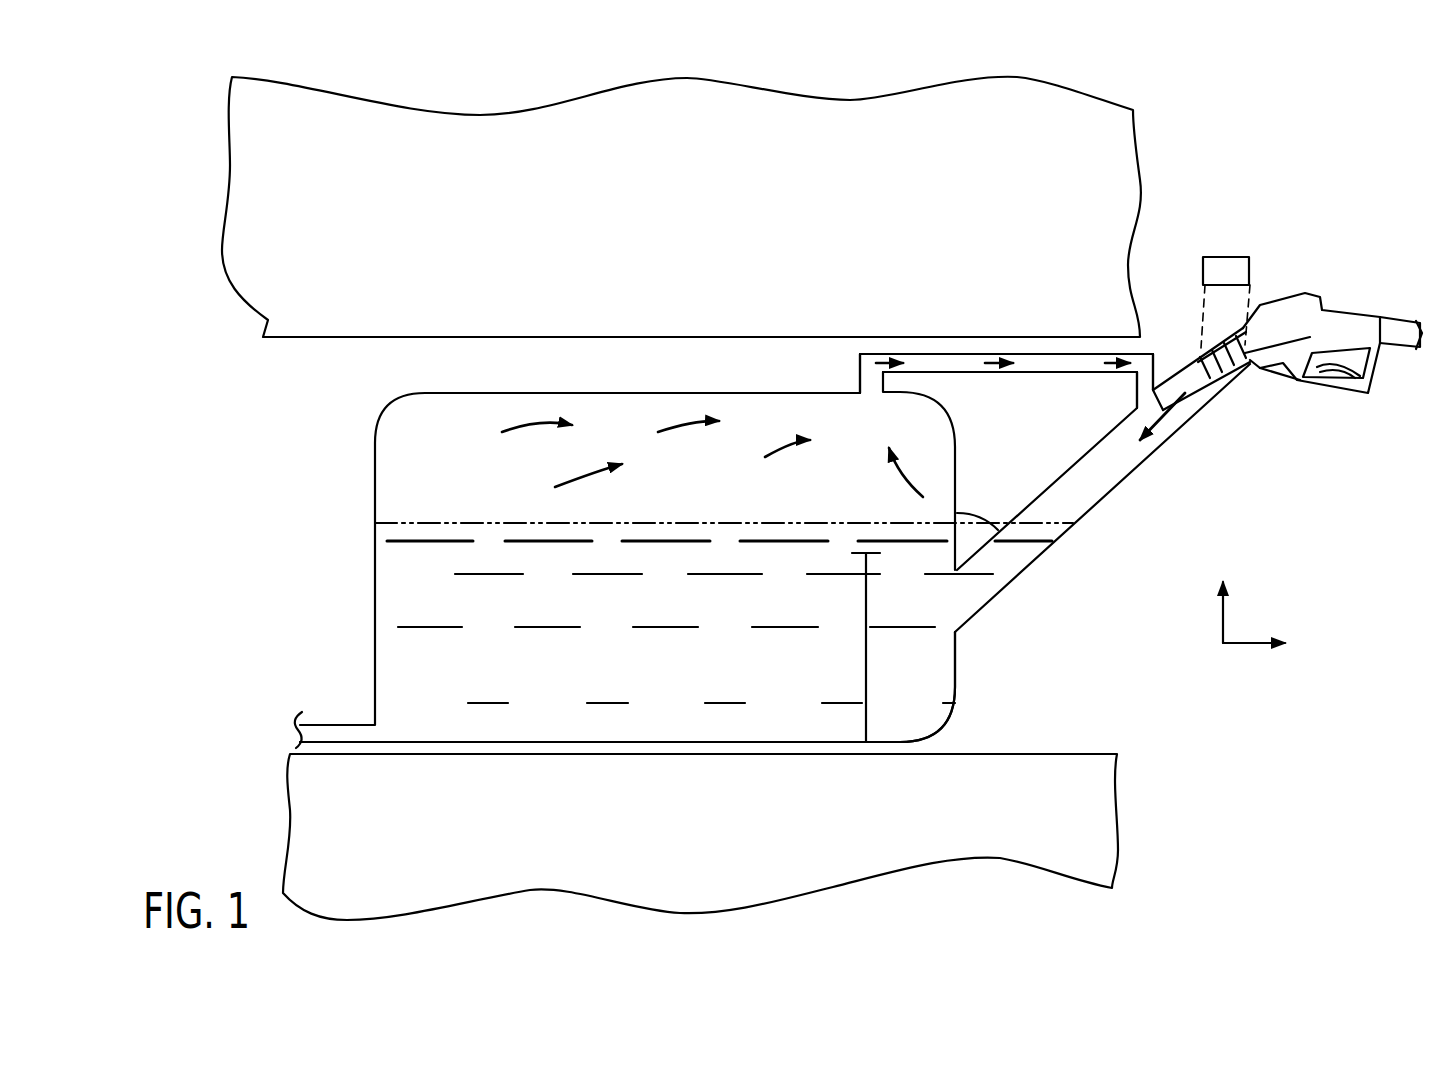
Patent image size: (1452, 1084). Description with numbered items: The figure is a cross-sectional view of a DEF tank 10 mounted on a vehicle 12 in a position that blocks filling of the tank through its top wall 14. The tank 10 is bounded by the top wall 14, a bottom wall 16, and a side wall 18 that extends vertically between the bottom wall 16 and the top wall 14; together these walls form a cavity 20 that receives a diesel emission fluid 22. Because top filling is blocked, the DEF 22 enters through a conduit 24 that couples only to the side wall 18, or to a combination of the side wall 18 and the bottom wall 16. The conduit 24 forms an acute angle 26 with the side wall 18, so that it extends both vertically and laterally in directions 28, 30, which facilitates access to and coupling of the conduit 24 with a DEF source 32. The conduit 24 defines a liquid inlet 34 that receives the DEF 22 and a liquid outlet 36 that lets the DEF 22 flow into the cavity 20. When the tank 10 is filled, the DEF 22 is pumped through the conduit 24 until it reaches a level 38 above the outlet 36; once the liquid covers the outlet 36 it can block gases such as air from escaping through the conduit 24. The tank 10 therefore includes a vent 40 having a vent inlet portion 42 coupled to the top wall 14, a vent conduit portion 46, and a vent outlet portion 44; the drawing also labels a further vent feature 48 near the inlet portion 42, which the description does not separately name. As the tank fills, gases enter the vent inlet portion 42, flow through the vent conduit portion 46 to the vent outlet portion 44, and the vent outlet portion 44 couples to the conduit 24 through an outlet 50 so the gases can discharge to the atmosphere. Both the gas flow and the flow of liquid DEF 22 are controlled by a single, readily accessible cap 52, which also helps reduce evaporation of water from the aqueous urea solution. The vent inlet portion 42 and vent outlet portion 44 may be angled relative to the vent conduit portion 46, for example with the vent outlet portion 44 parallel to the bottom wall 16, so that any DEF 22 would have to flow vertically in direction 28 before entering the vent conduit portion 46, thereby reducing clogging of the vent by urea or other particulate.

The DEF tank 10 is at (1148, 611).
The vehicle 12 is at (584, 199).
The top wall 14 is at (580, 393).
The bottom wall 16 is at (600, 745).
The side wall 18 is at (957, 657).
The cavity 20 is at (504, 477).
The diesel emission fluid (DEF) 22 is at (504, 675).
The conduit 24 is at (1095, 505).
The acute angle 26 is at (993, 528).
The vertical direction 28 is at (1223, 612).
The lateral direction 30 is at (1253, 643).
The DEF source 32 is at (1308, 305).
The liquid inlet 34 is at (1226, 380).
The liquid outlet 36 is at (955, 630).
The level 38 is at (866, 645).
The vent 40 is at (974, 336).
The vent inlet portion 42 is at (846, 381).
The vent outlet portion 44 is at (1165, 368).
The vent conduit portion 46 is at (938, 353).
The channel lower wall 48 is at (858, 395).
The outlet 50 is at (1137, 408).
The cap 52 is at (1228, 257).